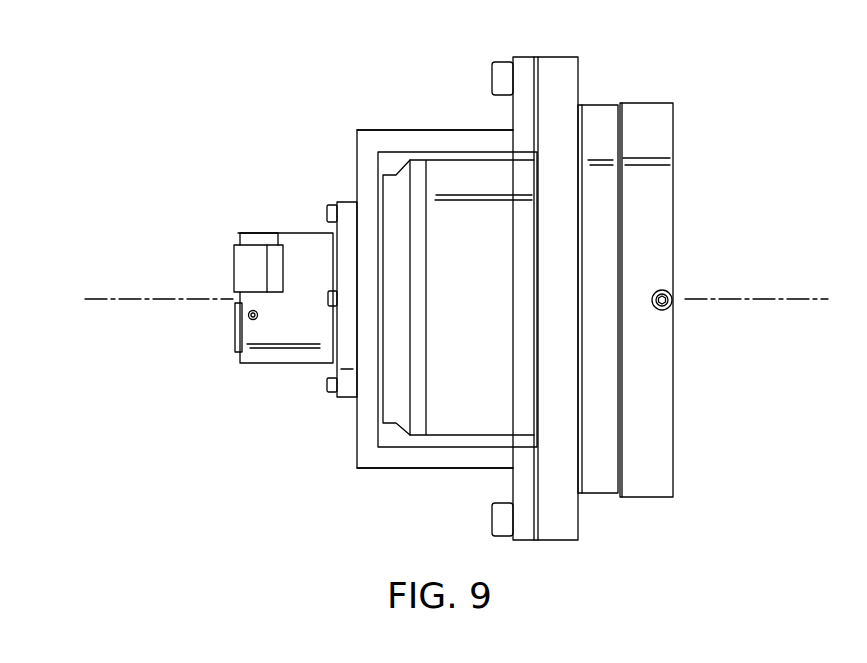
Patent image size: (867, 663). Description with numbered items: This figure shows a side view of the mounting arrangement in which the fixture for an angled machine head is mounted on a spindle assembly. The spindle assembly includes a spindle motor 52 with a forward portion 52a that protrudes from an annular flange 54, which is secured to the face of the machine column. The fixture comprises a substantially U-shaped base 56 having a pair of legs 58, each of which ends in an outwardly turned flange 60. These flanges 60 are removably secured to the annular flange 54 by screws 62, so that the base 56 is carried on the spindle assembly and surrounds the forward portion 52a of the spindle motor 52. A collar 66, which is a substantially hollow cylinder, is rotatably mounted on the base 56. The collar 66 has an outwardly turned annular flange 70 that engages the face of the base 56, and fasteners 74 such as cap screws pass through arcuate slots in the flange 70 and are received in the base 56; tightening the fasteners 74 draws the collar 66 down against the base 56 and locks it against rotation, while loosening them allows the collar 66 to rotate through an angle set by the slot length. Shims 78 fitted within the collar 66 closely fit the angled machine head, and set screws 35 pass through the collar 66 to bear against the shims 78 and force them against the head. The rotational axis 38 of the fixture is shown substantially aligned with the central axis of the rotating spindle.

The set screws 35 is at (240, 321).
The rotational axis 38 is at (135, 298).
The spindle motor 52 is at (647, 395).
The forward portion 52a is at (450, 392).
The annular flange 54 is at (583, 462).
The base 56 is at (368, 427).
The legs 58 is at (443, 145).
The flanges 60 is at (522, 97).
The screws 62 is at (507, 78).
The collar 66 is at (280, 340).
The annular flange 70 is at (348, 208).
The fasteners 74 is at (327, 215).
The shims 78 is at (255, 262).